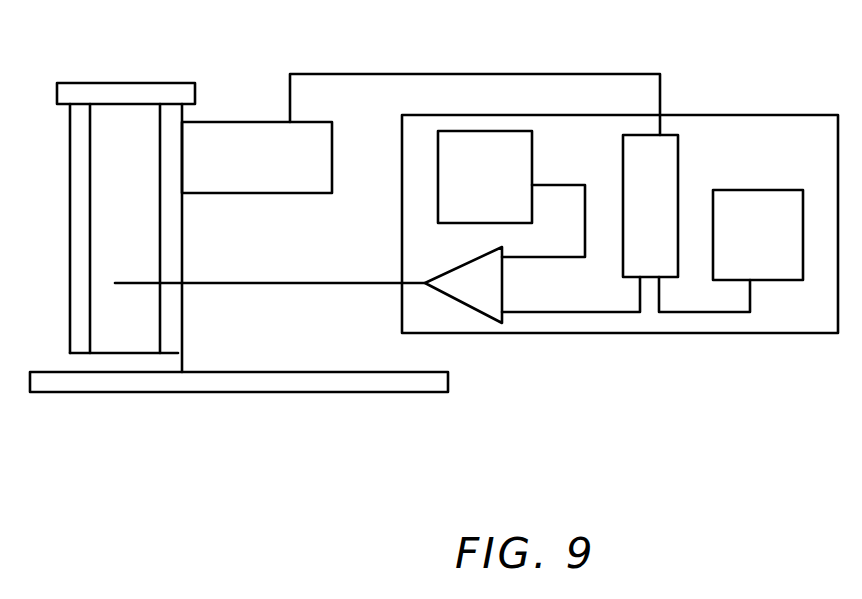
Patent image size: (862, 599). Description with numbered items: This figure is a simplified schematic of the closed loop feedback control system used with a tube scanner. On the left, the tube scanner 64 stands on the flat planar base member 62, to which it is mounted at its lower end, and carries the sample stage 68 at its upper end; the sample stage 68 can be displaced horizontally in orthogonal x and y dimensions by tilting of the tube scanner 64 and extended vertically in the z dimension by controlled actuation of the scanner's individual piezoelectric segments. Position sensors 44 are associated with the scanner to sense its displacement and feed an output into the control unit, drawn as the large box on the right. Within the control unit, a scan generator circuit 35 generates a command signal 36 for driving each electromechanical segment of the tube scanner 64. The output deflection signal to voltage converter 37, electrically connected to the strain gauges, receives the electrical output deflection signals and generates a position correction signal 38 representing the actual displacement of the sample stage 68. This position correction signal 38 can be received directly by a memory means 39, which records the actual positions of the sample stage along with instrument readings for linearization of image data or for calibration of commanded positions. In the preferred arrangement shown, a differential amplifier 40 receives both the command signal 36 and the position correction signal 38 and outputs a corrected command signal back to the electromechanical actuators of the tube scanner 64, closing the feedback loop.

The scan generator circuit 35 is at (438, 141).
The command signal 36 is at (565, 185).
The output deflection signal to voltage converter 37 is at (680, 174).
The position correction signal 38 is at (618, 312).
The memory means 39 is at (754, 190).
The differential amplifier 40 is at (476, 261).
The position sensors 44 is at (266, 122).
The base member 62 is at (32, 380).
The tube scanner 64 is at (70, 226).
The sample stage 68 is at (142, 83).